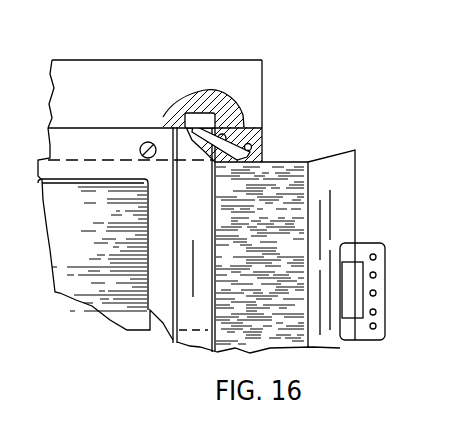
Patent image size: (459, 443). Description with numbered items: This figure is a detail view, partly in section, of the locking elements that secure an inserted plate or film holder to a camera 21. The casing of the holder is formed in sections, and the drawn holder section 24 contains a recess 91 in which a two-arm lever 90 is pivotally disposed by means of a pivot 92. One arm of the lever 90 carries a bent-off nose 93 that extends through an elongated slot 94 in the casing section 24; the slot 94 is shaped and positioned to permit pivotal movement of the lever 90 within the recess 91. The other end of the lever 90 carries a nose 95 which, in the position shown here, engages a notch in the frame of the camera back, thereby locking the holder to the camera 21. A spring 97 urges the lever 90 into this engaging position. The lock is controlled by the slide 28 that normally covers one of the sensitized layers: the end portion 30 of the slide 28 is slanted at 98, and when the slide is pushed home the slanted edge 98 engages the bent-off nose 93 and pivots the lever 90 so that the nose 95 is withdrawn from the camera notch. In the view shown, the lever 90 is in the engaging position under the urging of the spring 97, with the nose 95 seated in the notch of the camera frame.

The camera 21 is at (144, 46).
The holder section 24 is at (64, 137).
The slide 28 is at (295, 203).
The end portion of slide 30 is at (345, 228).
The two-arm lever 90 is at (262, 128).
The recess 91 is at (188, 130).
The pivot 92 is at (238, 118).
The bent-off nose 93 is at (262, 147).
The elongated slot 94 is at (253, 148).
The nose 95 is at (170, 114).
The spring 97 is at (203, 132).
The slanted edge 98 is at (327, 155).